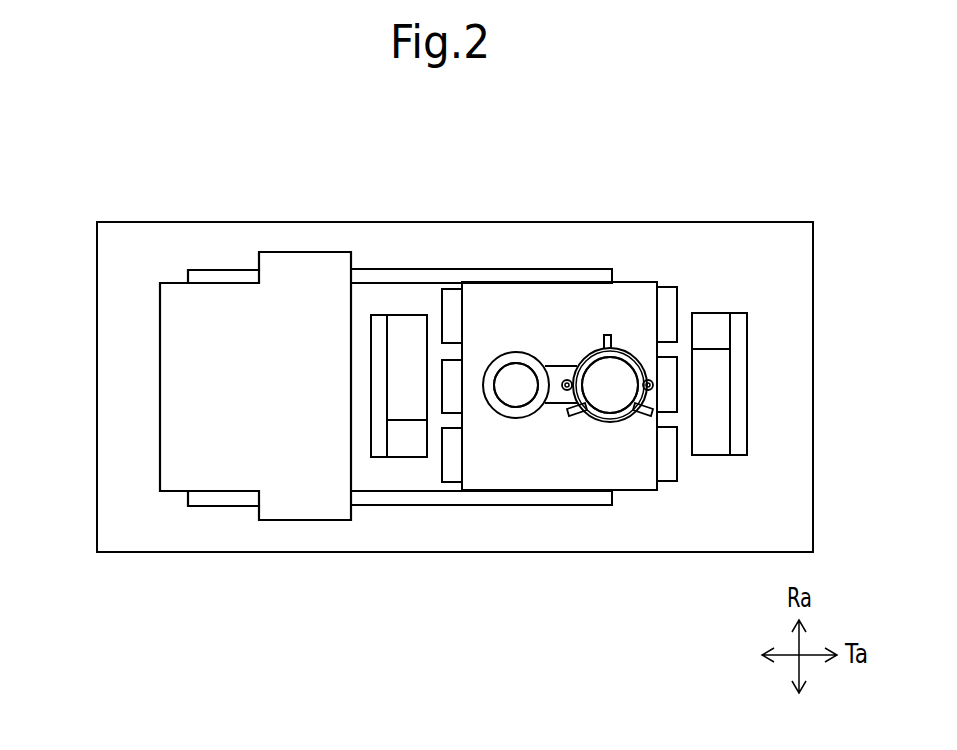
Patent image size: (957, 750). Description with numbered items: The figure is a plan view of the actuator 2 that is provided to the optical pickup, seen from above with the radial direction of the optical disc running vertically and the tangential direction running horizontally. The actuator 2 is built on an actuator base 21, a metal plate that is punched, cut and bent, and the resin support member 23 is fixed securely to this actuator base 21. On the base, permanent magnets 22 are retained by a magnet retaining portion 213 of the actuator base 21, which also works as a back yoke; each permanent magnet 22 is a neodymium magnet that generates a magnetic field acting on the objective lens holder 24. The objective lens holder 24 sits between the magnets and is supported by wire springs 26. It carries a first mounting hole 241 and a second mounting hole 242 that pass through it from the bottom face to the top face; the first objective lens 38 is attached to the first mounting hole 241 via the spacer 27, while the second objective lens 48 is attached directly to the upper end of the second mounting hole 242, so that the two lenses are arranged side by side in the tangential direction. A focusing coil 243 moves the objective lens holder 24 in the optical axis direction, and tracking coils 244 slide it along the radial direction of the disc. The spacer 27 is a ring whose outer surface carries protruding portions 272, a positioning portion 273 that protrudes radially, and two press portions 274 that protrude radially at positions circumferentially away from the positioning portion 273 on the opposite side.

The actuator 2 is at (104, 196).
The actuator base 21 is at (122, 343).
The permanent magnet 22 is at (402, 343).
The magnet retaining portion 213 is at (381, 423).
The support member 23 is at (232, 420).
The objective lens holder 24 is at (565, 305).
The first mounting hole 241 is at (610, 388).
The second mounting hole 242 is at (520, 408).
The focusing coil 243 is at (446, 318).
The tracking coil 244 is at (457, 378).
The wire springs 26 is at (487, 273).
The spacer 27 is at (617, 350).
The protruding portions 272 is at (571, 380).
The positioning portion 273 is at (606, 336).
The press portions 274 is at (571, 412).
The first objective lens 38 is at (612, 392).
The second objective lens 48 is at (516, 372).